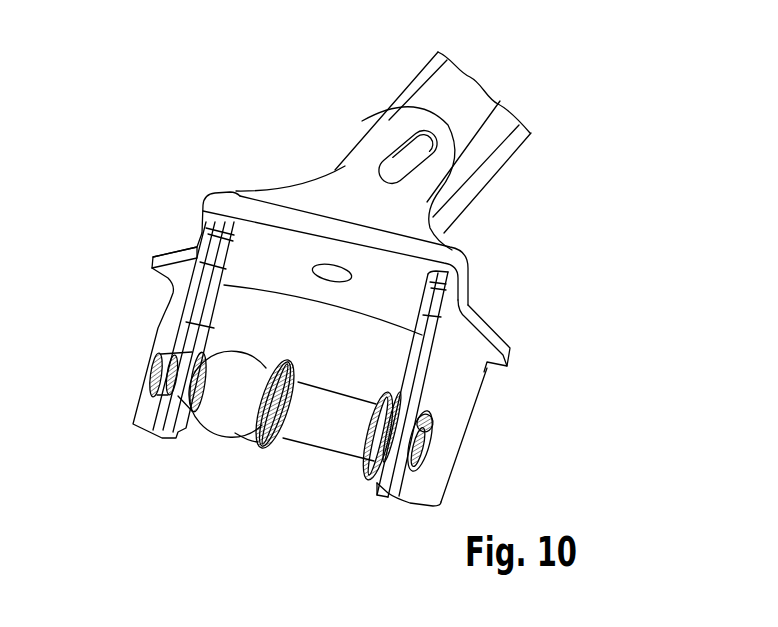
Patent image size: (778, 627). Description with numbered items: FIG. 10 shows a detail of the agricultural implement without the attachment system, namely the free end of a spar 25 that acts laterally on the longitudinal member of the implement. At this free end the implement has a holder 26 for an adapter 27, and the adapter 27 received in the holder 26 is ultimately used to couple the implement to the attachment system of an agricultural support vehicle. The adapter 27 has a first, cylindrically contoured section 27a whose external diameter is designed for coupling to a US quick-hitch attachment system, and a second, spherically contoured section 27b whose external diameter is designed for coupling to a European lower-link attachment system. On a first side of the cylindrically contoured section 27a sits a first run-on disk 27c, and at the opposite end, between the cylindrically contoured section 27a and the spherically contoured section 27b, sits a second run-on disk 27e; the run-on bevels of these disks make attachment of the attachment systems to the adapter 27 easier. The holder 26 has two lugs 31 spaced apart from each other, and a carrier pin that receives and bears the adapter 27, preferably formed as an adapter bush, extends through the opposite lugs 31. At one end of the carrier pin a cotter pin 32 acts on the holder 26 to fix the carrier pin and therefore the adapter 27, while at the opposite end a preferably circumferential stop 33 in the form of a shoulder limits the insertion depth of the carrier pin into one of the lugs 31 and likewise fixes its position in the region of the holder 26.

The spar 25 is at (430, 92).
The holder 26 is at (512, 309).
The adapter 27 is at (272, 470).
The cylindrically contoured section 27a is at (357, 440).
The spherically contoured section 27b is at (212, 413).
The first run-on disk 27c is at (265, 450).
The second run-on disk 27e is at (385, 397).
The lug 31 is at (197, 325).
The cotter pin 32 is at (450, 448).
The stop 33 is at (140, 373).